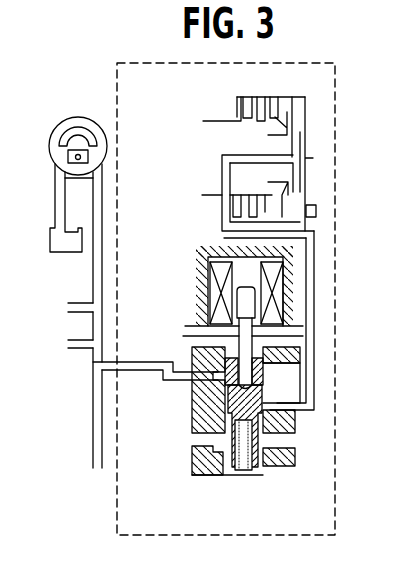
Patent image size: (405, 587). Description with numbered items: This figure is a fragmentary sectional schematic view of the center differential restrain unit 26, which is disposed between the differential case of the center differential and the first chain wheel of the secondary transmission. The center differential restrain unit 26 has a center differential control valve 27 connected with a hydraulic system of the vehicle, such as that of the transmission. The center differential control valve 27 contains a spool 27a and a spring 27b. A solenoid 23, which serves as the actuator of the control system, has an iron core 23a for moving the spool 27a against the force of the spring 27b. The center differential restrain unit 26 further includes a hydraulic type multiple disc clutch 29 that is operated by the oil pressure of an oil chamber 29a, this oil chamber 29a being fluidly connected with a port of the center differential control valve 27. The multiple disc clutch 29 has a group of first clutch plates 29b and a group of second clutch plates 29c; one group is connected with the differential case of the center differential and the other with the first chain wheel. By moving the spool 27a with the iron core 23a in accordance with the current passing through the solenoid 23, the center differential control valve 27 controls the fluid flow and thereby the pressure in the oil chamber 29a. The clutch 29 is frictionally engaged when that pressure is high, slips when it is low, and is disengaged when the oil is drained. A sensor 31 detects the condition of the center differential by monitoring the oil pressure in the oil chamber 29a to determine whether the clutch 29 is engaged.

The solenoid 23 is at (218, 290).
The iron core 23a is at (237, 337).
The center differential restrain unit 26 is at (341, 117).
The center differential control valve 27 is at (247, 480).
The spool 27a is at (262, 440).
The spring 27b is at (237, 458).
The hydraulic type multiple disc clutch 29 is at (227, 149).
The oil chamber 29a is at (295, 106).
The first clutch plates 29b is at (252, 100).
The second clutch plates 29c is at (250, 122).
The sensor 31 is at (317, 209).